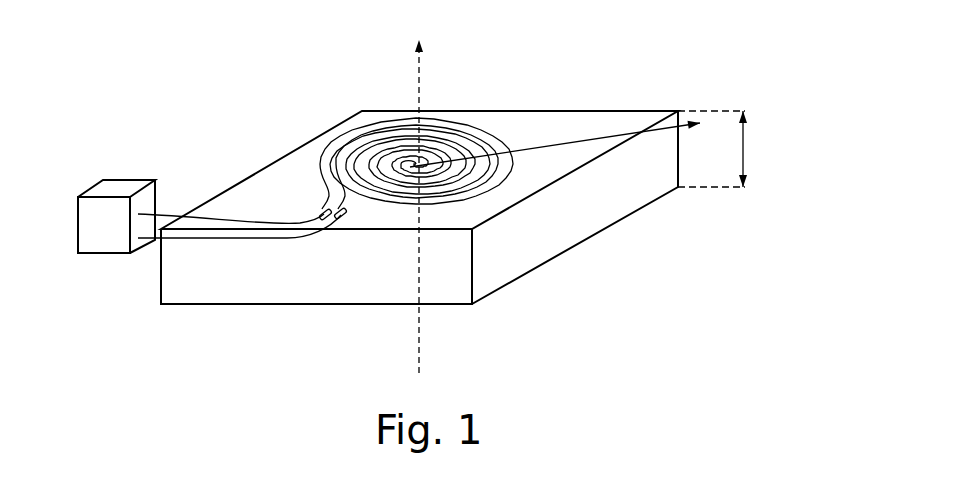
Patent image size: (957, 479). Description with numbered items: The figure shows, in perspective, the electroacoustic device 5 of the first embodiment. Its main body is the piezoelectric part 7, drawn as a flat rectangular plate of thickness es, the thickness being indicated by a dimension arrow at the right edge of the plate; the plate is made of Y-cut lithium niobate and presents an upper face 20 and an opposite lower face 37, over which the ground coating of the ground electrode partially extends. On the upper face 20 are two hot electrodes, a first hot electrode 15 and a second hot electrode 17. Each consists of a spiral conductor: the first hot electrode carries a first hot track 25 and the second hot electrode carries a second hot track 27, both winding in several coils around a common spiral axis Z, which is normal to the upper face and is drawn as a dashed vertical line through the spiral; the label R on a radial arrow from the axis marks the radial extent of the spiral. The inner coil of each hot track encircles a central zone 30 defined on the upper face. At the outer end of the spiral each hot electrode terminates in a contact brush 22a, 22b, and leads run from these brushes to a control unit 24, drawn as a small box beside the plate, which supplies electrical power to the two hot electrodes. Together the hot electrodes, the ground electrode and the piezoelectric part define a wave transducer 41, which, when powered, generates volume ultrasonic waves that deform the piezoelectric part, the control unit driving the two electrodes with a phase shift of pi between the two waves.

The electroacoustic device 5 is at (408, 212).
The piezoelectric part 7 is at (643, 177).
The first hot electrode 15 is at (477, 123).
The second hot electrode 17 is at (492, 140).
The upper face 20 is at (305, 163).
The contact brush 22a is at (322, 212).
The contact brush 22b is at (345, 220).
The control unit 24 is at (97, 243).
The first hot track 25 is at (443, 120).
The second hot track 27 is at (510, 183).
The central zone 30 is at (408, 172).
The lower face 37 is at (247, 308).
The wave transducer 41 is at (431, 188).
The radius of spiral R is at (600, 138).
The spiral axis Z is at (418, 47).
The thickness es is at (745, 150).